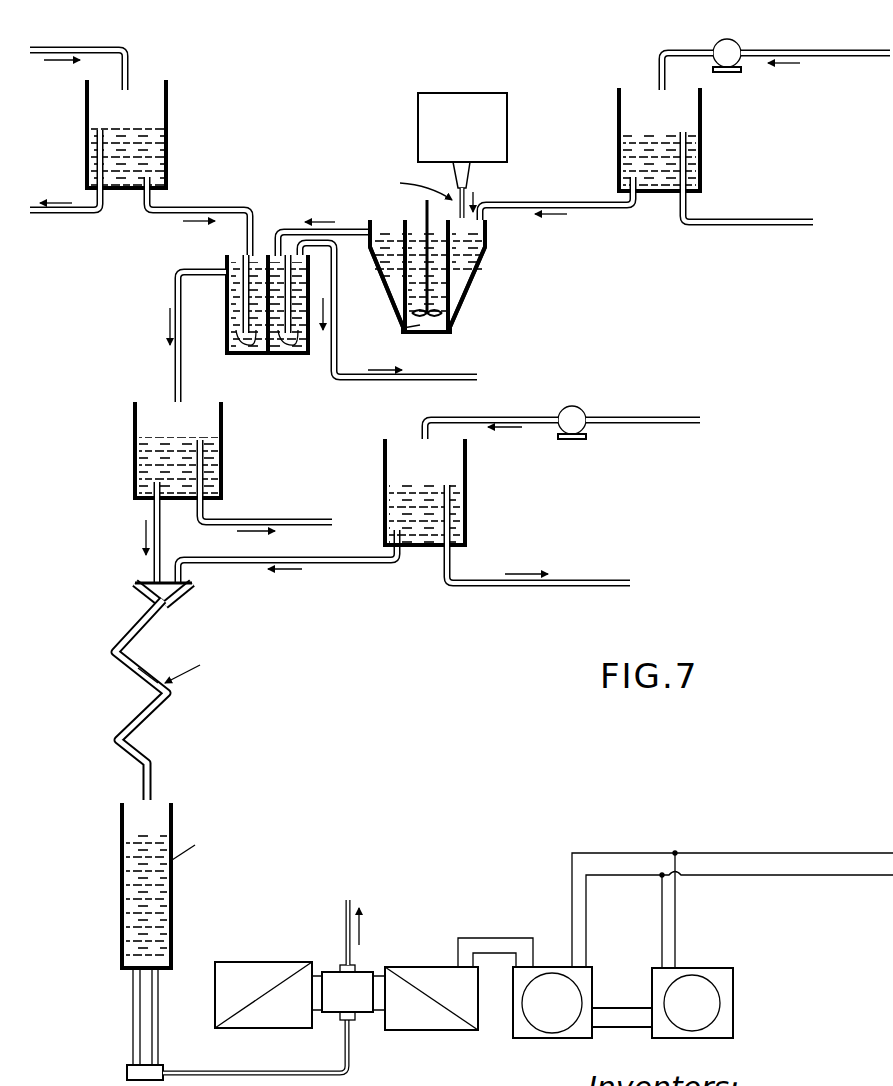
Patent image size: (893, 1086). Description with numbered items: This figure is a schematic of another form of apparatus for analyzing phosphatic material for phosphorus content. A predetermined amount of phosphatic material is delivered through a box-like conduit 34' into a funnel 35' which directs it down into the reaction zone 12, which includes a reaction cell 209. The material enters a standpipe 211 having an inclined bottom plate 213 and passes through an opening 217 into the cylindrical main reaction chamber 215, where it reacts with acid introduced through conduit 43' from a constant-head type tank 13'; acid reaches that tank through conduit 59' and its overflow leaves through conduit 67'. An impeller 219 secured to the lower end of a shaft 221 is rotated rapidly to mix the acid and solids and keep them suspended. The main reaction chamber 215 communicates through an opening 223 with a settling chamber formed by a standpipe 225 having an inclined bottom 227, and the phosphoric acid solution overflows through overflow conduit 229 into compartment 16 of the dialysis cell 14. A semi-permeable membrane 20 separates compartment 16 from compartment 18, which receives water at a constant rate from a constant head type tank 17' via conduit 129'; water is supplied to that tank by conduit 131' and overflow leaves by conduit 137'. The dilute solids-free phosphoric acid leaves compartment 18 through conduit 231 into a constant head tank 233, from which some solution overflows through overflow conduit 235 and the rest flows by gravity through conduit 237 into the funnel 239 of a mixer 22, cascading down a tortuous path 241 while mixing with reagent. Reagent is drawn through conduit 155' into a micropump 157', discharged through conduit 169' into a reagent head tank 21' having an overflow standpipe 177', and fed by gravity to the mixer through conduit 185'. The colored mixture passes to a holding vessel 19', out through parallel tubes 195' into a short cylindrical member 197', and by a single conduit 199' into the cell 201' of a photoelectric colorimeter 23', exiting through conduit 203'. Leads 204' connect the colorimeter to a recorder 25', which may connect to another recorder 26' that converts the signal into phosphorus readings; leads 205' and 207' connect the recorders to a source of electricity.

The conduit 131' is at (108, 54).
The constant head type tank 17' is at (159, 134).
The conduit 137' is at (96, 191).
The conduit 129' is at (198, 215).
The overflow conduit 229 is at (290, 229).
The dialysis cell 14 is at (224, 322).
The compartment 18 is at (238, 355).
The semi-permeable membrane 20 is at (266, 345).
The compartment 16 is at (292, 355).
The conduit 231 is at (176, 277).
The constant head tank 233 is at (133, 426).
The overflow conduit 235 is at (206, 465).
The conduit 237 is at (152, 505).
The funnel 239 is at (180, 595).
The mixer 22 is at (157, 624).
The tortuous path 241 is at (150, 717).
The reagent mixing vessel or holding vessel 19' is at (186, 885).
The parallel tubes or conduits 195' is at (115, 1017).
The short cylindrical member 197' is at (110, 1066).
The conduit 199' is at (286, 1053).
The cell 201' is at (335, 1013).
The conduit 203' is at (321, 919).
The photoelectric colorimeter 23' is at (425, 989).
The leads 204' is at (495, 931).
The leads 205' is at (732, 893).
The leads 207' is at (697, 909).
The recorder 25' is at (582, 1016).
The recorder 26' is at (715, 1003).
The conduit 59' is at (776, 52).
The constant-head type tank 13' is at (687, 139).
The conduit 43' is at (556, 197).
The conduit 67' is at (748, 195).
The box-like conduit 34' is at (484, 127).
The funnel 35' is at (436, 190).
The shaft 221 is at (425, 203).
The standpipe 211 is at (475, 236).
The main reaction chamber 215 is at (440, 262).
The inclined bottom plate 213 is at (470, 280).
The opening 217 is at (450, 290).
The reaction zone 12 is at (455, 322).
The reaction cell 209 is at (432, 334).
The standpipe 225 is at (375, 258).
The inclined bottom 227 is at (392, 300).
The opening 223 is at (410, 316).
The impeller 219 is at (403, 325).
The conduit 169' is at (491, 409).
The micropump 157' is at (611, 399).
The conduit 155' is at (643, 441).
The reagent head tank 21' is at (455, 492).
The overflow conduit or standpipe 177' is at (538, 547).
The conduit 185' is at (287, 565).